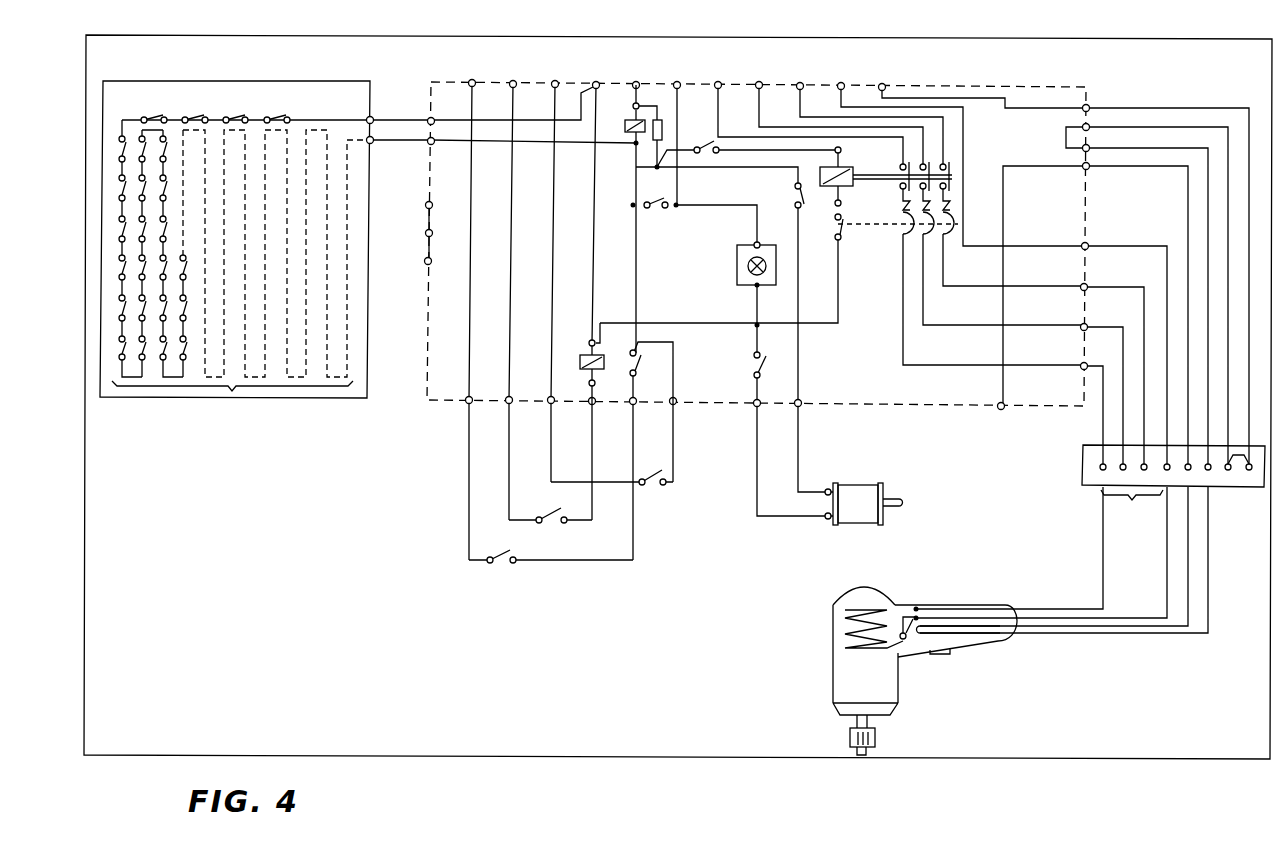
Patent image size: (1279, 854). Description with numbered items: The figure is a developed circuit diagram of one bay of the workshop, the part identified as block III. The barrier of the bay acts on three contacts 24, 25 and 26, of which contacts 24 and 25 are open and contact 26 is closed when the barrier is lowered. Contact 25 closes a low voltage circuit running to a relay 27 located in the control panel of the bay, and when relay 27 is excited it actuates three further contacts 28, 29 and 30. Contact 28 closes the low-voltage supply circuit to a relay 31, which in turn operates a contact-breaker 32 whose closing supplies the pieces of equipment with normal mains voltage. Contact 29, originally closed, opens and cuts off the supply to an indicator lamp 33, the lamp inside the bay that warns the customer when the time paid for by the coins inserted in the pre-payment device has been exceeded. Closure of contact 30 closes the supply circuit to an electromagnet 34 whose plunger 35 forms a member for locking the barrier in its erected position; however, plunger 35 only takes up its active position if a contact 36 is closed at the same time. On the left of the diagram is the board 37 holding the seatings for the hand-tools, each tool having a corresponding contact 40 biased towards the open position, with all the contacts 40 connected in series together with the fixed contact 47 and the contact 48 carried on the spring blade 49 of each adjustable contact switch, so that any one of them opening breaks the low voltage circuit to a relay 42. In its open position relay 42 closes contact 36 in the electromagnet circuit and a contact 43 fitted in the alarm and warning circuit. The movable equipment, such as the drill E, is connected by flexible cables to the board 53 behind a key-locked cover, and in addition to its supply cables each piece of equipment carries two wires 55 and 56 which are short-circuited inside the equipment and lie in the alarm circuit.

The contact 24 is at (652, 479).
The contact 25 is at (553, 516).
The contact 26 is at (500, 559).
The relay 27 is at (586, 351).
The contact 28 is at (710, 143).
The contact 29 is at (651, 208).
The contact 30 is at (766, 362).
The relay 31 is at (853, 169).
The contact-breaker 32 is at (879, 181).
The indicator lamp 33 is at (737, 266).
The electromagnet 34 is at (853, 498).
The plunger 35 is at (898, 501).
The contact 36 is at (797, 196).
The board 37 is at (216, 106).
The contact 40 is at (157, 117).
The relay 42 is at (621, 118).
The contact 43 is at (642, 362).
The fixed contact 47 is at (297, 120).
The contact 48 is at (255, 118).
The spring blade 49 is at (278, 118).
The board 53 is at (1259, 472).
The wire 55 is at (986, 630).
The wire 56 is at (986, 626).
The drill E is at (850, 676).
The block III is at (1018, 60).